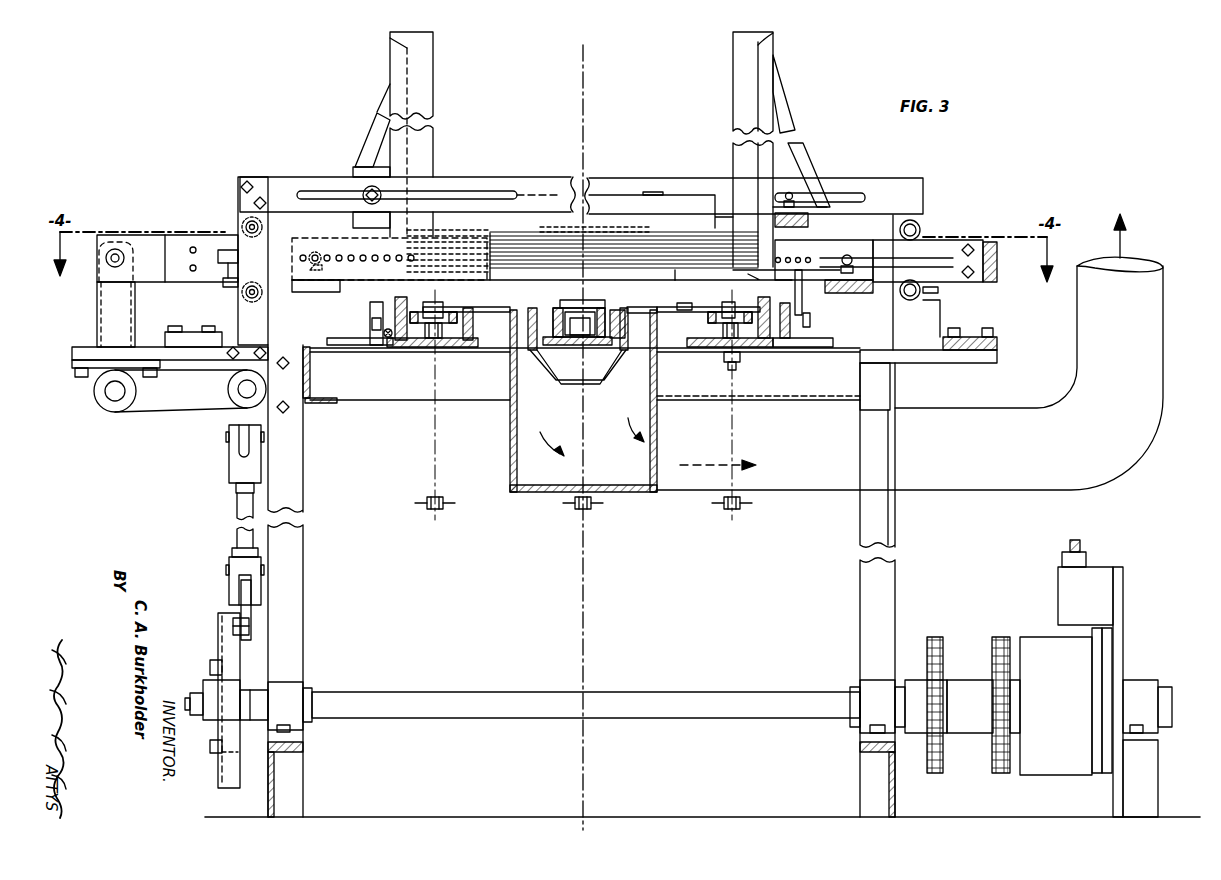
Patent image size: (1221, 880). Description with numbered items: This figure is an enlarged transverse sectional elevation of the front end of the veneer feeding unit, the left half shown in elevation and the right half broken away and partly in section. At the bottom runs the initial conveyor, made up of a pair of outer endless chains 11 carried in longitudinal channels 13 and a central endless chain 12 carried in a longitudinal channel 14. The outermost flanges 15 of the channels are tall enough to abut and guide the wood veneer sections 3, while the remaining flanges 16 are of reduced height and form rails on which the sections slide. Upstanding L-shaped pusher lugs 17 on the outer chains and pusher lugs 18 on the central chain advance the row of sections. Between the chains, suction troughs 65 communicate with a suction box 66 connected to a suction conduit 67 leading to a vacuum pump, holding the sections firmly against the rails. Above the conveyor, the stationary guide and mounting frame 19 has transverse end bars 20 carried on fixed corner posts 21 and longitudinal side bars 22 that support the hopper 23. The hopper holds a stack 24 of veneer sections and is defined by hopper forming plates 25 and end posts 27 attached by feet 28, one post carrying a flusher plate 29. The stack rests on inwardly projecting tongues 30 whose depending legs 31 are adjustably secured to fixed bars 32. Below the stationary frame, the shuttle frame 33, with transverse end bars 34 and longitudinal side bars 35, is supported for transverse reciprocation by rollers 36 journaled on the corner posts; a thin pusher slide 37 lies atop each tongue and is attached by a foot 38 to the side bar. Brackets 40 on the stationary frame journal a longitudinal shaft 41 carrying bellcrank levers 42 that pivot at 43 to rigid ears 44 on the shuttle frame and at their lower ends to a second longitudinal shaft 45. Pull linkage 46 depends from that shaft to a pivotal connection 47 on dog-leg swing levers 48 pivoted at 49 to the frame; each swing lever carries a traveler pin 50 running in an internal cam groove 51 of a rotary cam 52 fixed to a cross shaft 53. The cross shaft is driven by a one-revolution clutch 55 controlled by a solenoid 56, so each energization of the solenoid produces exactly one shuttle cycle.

The wood veneer sections 3 is at (498, 306).
The outer endless chains 11 is at (428, 334).
The central endless chain 12 is at (570, 336).
The longitudinal channels 13 is at (452, 348).
The longitudinal channel 14 is at (602, 348).
The outermost flanges 15 is at (388, 338).
The remaining flanges 16 is at (683, 306).
The pusher lugs 17 is at (437, 303).
The pusher lugs 18 is at (589, 302).
The stationary guide and mounting frame 19 is at (860, 176).
The transverse end bars 20 is at (485, 178).
The corner posts 21 is at (262, 317).
The longitudinal side bars 22 is at (362, 218).
The hopper 23 is at (442, 90).
The stack 24 is at (605, 252).
The hopper forming plates 25 is at (426, 150).
The end posts 27 is at (771, 66).
The feet 28 is at (792, 200).
The flusher plate 29 is at (760, 262).
The tongues 30 is at (757, 280).
The depending legs 31 is at (805, 302).
The fixed bars 32 is at (368, 309).
The shuttle frame 33 is at (223, 228).
The transverse end bars 34 is at (285, 253).
The longitudinal side bars 35 is at (318, 291).
The rollers 36 is at (912, 286).
The pusher slide 37 is at (803, 268).
The foot 38 is at (848, 276).
The brackets 40 is at (188, 338).
The longitudinal shaft 41 is at (118, 388).
The bellcrank levers 42 is at (105, 312).
The pivot 43 is at (108, 265).
The rigid ears 44 is at (150, 265).
The longitudinal shaft 45 is at (238, 396).
The pull linkage 46 is at (236, 503).
The pivotal connection 47 is at (226, 580).
The dog-leg swing levers 48 is at (250, 588).
The pivot 49 is at (250, 626).
The traveler pin 50 is at (220, 618).
The internal cam groove 51 is at (232, 782).
The rotary cam 52 is at (215, 705).
The cross shaft 53 is at (655, 692).
The one-revolution clutch 55 is at (1057, 755).
The solenoid 56 is at (1078, 590).
The suction troughs 65 is at (518, 335).
The suction box 66 is at (532, 494).
The suction conduit 67 is at (1136, 406).